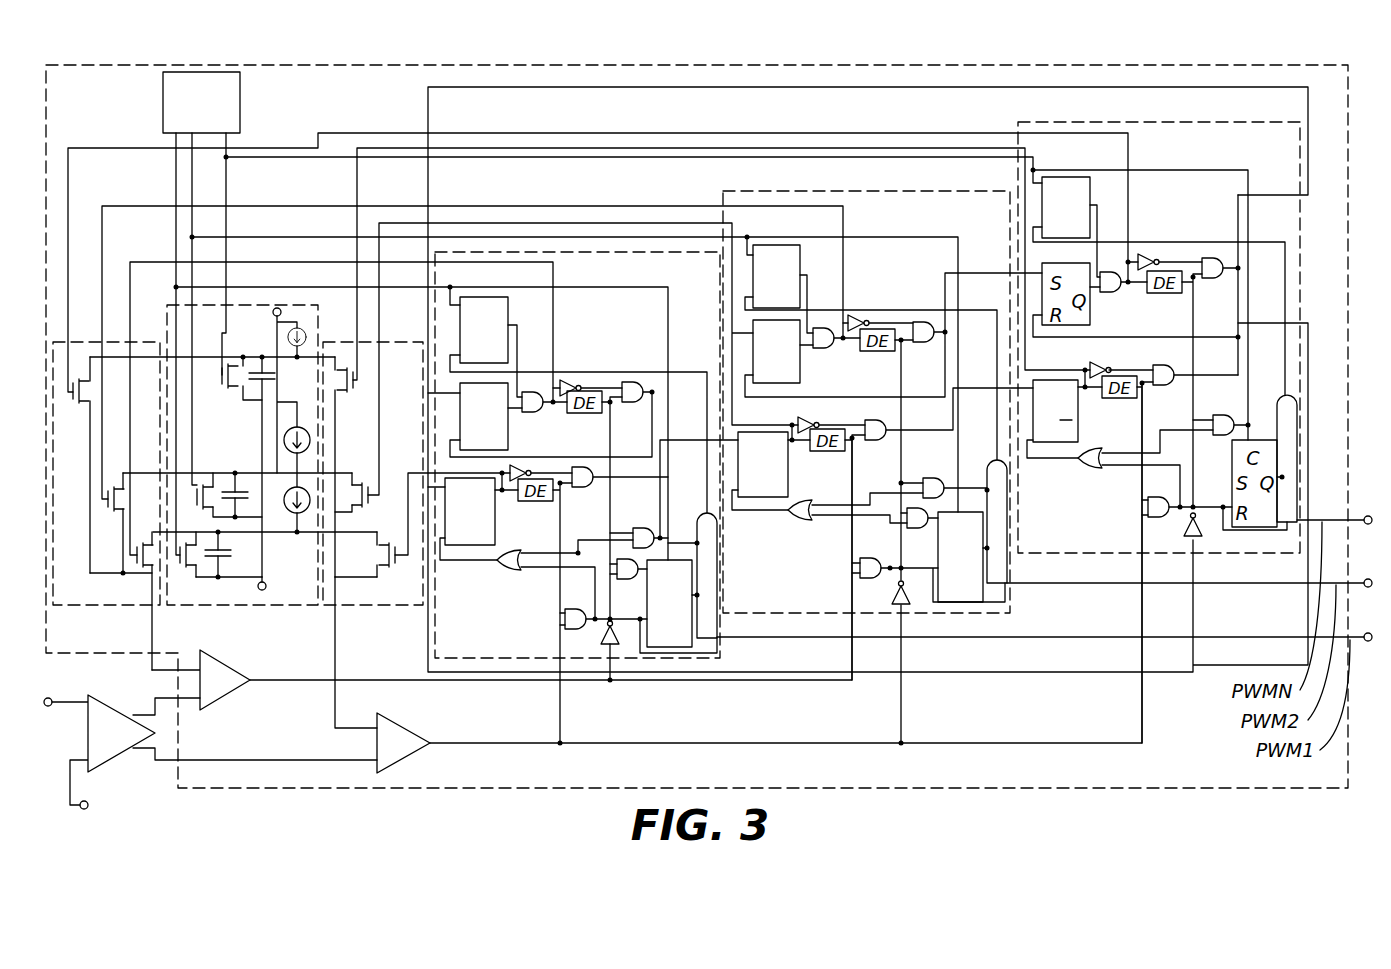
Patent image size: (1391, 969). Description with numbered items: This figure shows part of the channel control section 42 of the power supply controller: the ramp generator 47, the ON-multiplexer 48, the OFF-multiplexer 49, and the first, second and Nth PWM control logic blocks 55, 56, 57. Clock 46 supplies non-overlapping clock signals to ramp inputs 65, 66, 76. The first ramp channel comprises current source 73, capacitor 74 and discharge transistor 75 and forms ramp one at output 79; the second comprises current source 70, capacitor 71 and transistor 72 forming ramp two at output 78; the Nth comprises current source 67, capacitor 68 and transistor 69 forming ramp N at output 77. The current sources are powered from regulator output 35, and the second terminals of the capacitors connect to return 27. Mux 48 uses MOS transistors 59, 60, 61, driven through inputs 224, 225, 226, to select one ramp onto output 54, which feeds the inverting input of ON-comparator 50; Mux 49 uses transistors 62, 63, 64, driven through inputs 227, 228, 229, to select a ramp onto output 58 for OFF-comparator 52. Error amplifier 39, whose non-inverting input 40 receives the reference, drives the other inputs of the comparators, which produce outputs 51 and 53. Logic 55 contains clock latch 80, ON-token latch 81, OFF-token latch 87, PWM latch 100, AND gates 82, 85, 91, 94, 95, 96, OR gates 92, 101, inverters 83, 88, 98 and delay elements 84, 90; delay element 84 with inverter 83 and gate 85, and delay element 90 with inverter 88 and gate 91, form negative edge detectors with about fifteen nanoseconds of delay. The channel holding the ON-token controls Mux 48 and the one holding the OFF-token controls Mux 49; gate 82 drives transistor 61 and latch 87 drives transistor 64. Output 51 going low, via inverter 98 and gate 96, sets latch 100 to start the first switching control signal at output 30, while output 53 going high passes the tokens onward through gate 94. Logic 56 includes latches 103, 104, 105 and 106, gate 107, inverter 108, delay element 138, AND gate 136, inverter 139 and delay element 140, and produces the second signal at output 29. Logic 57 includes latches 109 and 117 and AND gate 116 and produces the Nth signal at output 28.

The return 27 is at (268, 586).
The output 28 is at (1368, 516).
The output 29 is at (1368, 578).
The output 30 is at (1368, 633).
The output 35 is at (275, 306).
The differential error amplifier 39 is at (108, 700).
The non-inverting input 40 is at (50, 697).
The channel control section 42 is at (1085, 790).
The multi-phase clock generator 46 is at (242, 120).
The multi-channel ramp generator 47 is at (208, 607).
The multi-channel ON-multiplexer 48 is at (93, 607).
The multi-channel OFF-multiplexer 49 is at (400, 607).
The ON-comparator 50 is at (226, 662).
The output 51 is at (260, 679).
The OFF-comparator 52 is at (405, 721).
The output 53 is at (442, 740).
The output 54 is at (152, 650).
The first PWM control logic block 55 is at (722, 640).
The second PWM control logic block 56 is at (1012, 600).
The Nth PWM control logic block 57 is at (1086, 555).
The output 58 is at (335, 652).
The MOS transistor 59 is at (87, 404).
The MOS transistor 60 is at (117, 512).
The MOS transistor 61 is at (140, 572).
The MOS transistor 62 is at (345, 393).
The MOS transistor 63 is at (380, 508).
The MOS transistor 64 is at (395, 570).
The input 65 is at (175, 193).
The input 66 is at (193, 197).
The current source 67 is at (308, 332).
The capacitor 68 is at (274, 378).
The discharge transistor 69 is at (232, 392).
The current source 70 is at (311, 440).
The capacitor 71 is at (240, 488).
The discharge transistor 72 is at (205, 478).
The current source 73 is at (311, 496).
The capacitor 74 is at (235, 553).
The discharge transistor 75 is at (190, 572).
The input 76 is at (228, 197).
The output 77 is at (182, 354).
The output 78 is at (178, 472).
The output 79 is at (178, 531).
The clock latch 80 is at (510, 322).
The ON-token latch 81 is at (511, 447).
The AND gate 82 is at (534, 390).
The inverter 83 is at (570, 380).
The delay element 84 is at (585, 415).
The AND gate 85 is at (634, 404).
The OFF-token latch 87 is at (498, 521).
The inverter 88 is at (528, 465).
The delay element 90 is at (535, 503).
The AND gate 91 is at (586, 489).
The OR gate 92 is at (507, 576).
The AND gate 94 is at (562, 619).
The AND gate 95 is at (641, 535).
The AND gate 96 is at (638, 583).
The inverter 98 is at (600, 644).
The PWM latch 100 is at (672, 650).
The OR gate 101 is at (705, 513).
The latch 103 is at (778, 244).
The latch 104 is at (792, 385).
The latch 105 is at (800, 518).
The latch 106 is at (968, 604).
The gate 107 is at (824, 350).
The inverter 108 is at (860, 318).
The latch 109 is at (1093, 205).
The AND gate 116 is at (1120, 292).
The latch 117 is at (1080, 405).
The AND gate 136 is at (935, 480).
The delay element 138 is at (882, 352).
The inverter 139 is at (810, 420).
The delay element 140 is at (830, 452).
The input 224 is at (122, 147).
The input 225 is at (145, 205).
The input 226 is at (165, 261).
The input 227 is at (356, 222).
The input 228 is at (379, 222).
The input 229 is at (407, 473).